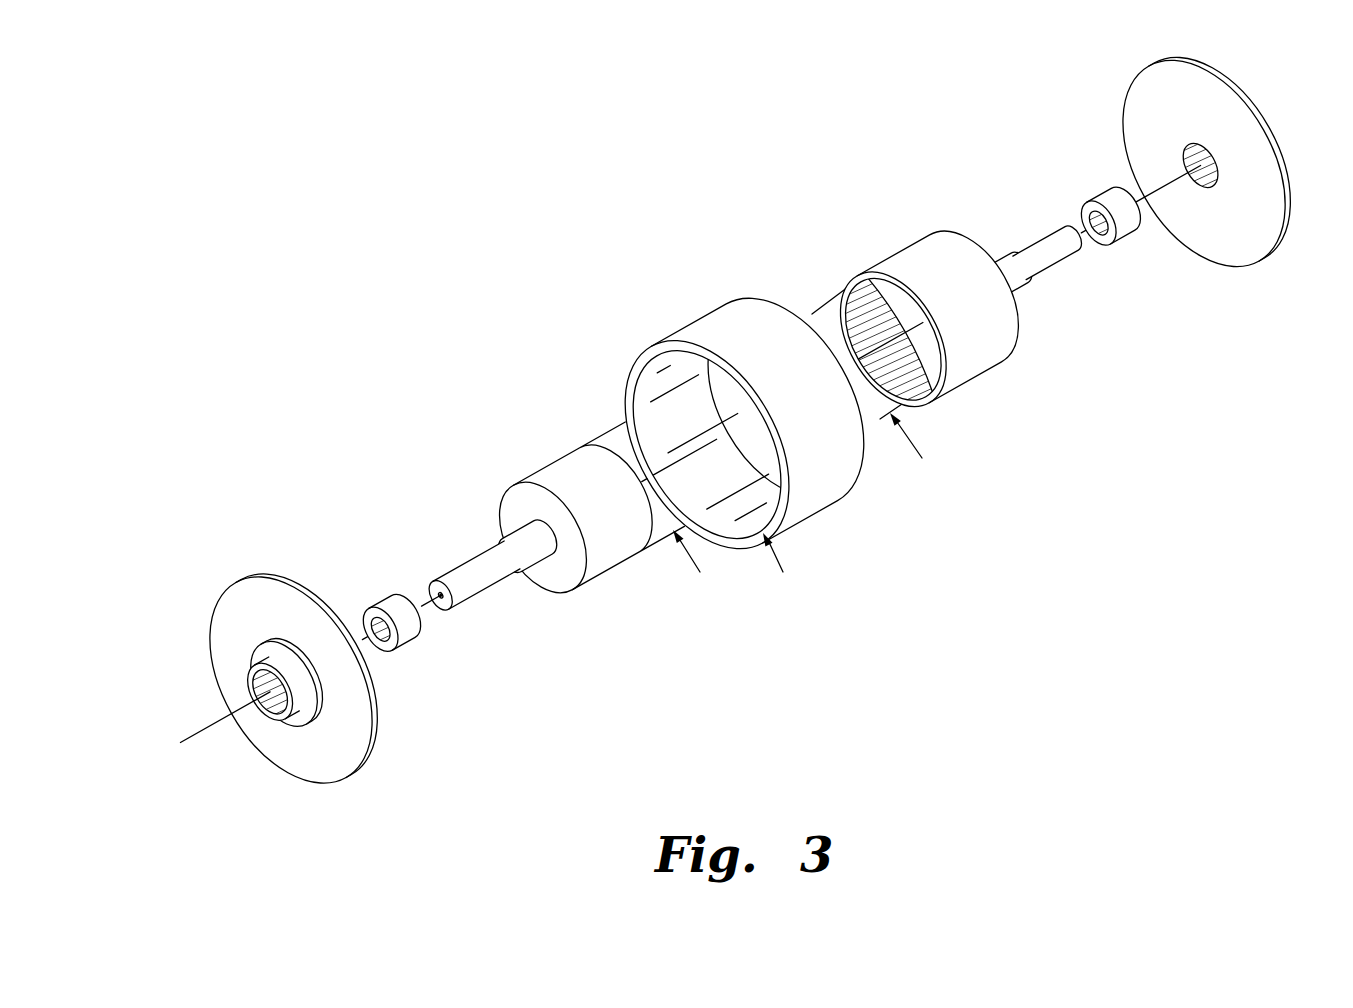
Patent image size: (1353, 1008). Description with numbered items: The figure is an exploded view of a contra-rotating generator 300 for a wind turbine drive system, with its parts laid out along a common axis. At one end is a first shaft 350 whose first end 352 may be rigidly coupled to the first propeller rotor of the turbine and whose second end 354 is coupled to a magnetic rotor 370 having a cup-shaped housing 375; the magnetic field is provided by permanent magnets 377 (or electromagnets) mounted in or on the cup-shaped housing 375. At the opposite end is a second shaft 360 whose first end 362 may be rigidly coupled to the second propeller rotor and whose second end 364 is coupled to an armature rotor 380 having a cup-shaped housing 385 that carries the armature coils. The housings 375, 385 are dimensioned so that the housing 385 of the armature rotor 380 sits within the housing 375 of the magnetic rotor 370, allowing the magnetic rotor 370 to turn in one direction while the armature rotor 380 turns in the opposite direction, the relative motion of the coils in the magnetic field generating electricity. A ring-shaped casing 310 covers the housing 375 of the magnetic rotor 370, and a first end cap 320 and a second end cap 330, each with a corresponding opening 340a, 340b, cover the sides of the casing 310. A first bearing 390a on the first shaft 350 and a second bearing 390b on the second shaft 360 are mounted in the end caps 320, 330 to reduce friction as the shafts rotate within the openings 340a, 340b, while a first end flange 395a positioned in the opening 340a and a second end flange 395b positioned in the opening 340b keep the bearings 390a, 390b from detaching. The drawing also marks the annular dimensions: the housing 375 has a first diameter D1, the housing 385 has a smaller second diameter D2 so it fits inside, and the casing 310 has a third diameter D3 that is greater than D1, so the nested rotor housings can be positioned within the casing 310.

The contra-rotating generator 300 is at (356, 150).
The casing 310 is at (677, 292).
The first end cap 320 is at (1122, 106).
The second end cap 330 is at (238, 578).
The opening 340a is at (1170, 166).
The opening 340b is at (240, 693).
The first shaft 350 is at (1025, 210).
The first end 352 is at (1104, 288).
The second end 354 is at (1040, 315).
The second shaft 360 is at (440, 528).
The first end 362 is at (461, 625).
The second end 364 is at (522, 603).
The magnetic rotor 370 is at (871, 222).
The cup-shaped housing 375 is at (920, 238).
The permanent magnets 377 is at (884, 405).
The armature rotor 380 is at (490, 438).
The cup-shaped housing 385 is at (541, 474).
The first bearing 390a is at (1128, 250).
The second bearing 390b is at (381, 598).
The first end flange 395a is at (1320, 134).
The second end flange 395b is at (293, 680).
The first diameter D1 is at (825, 291).
The second diameter D2 is at (609, 419).
The third diameter D3 is at (650, 346).